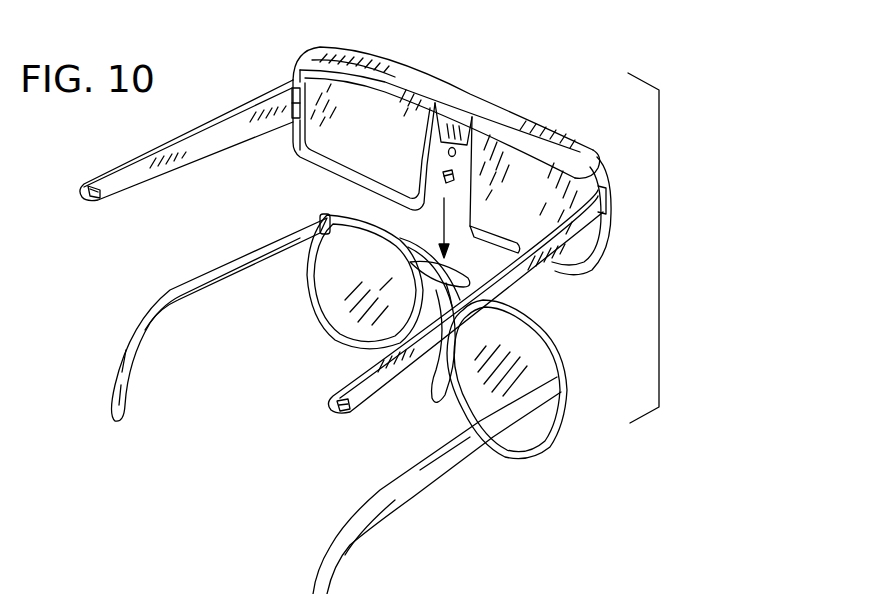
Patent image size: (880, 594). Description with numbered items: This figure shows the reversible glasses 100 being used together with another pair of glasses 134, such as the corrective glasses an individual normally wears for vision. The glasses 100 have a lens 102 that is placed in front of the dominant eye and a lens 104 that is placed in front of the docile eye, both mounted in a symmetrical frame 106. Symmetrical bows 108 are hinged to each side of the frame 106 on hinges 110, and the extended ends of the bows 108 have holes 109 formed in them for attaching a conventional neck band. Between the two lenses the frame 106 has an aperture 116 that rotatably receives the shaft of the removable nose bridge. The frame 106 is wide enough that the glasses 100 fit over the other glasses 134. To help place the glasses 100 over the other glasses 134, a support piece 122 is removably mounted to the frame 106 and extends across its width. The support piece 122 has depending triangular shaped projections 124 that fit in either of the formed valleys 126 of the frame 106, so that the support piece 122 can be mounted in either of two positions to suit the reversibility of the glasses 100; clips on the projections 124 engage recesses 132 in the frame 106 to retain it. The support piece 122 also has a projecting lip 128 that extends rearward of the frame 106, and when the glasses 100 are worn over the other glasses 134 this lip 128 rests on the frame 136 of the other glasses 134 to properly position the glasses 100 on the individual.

The glasses 100 is at (292, 67).
The lens 102 is at (545, 199).
The lens 104 is at (385, 114).
The symmetrical frame 106 is at (565, 123).
The symmetrical bows 108 is at (209, 142).
The holes 109 is at (100, 190).
The hinges 110 is at (291, 100).
The aperture 116 is at (447, 150).
The support piece 122 is at (393, 77).
The triangular shaped projections 124 is at (467, 110).
The formed valleys 126 is at (345, 204).
The projecting lip 128 is at (349, 56).
The recesses 132 is at (443, 175).
The other glasses 134 is at (561, 440).
The frame 136 is at (410, 267).